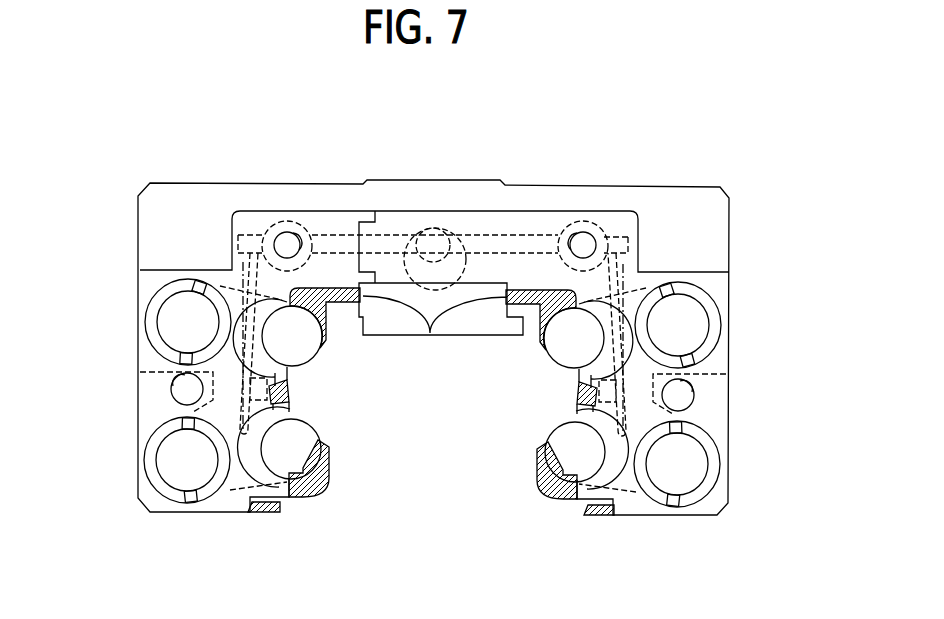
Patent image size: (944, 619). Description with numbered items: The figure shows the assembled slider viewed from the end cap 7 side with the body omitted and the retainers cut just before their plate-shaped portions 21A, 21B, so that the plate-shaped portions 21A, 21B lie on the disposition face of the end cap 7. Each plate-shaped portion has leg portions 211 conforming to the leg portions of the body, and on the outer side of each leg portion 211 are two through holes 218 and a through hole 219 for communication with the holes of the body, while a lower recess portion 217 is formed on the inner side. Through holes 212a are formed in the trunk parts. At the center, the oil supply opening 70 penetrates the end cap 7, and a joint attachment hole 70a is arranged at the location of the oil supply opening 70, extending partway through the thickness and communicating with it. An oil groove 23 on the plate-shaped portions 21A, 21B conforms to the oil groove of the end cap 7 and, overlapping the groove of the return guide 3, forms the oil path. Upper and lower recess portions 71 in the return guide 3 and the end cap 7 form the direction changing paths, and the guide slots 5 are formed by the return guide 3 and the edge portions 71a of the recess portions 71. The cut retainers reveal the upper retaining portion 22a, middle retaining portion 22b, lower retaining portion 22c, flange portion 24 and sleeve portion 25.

The end cap 7 is at (684, 208).
The plate-shaped portion 21B is at (262, 203).
The plate-shaped portion 21A is at (610, 203).
The leg portion 211 is at (150, 408).
The through hole 212a is at (588, 237).
The joint attachment hole 70a is at (406, 243).
The oil supply opening 70 is at (419, 231).
The oil groove 23 is at (480, 232).
The edge portion 71a is at (153, 327).
The through hole 218 is at (160, 305).
The guide slot 5 is at (192, 290).
The through hole 219 is at (171, 389).
The recess portion 71 is at (292, 338).
The upper retaining portion 22a is at (325, 322).
The middle retaining portion 22b is at (288, 392).
The lower recess portion 217 is at (286, 375).
The lower retaining portion 22c is at (322, 462).
The flange portion 24 is at (430, 344).
The sleeve portion 25 is at (267, 514).
The return guide 3 is at (222, 497).